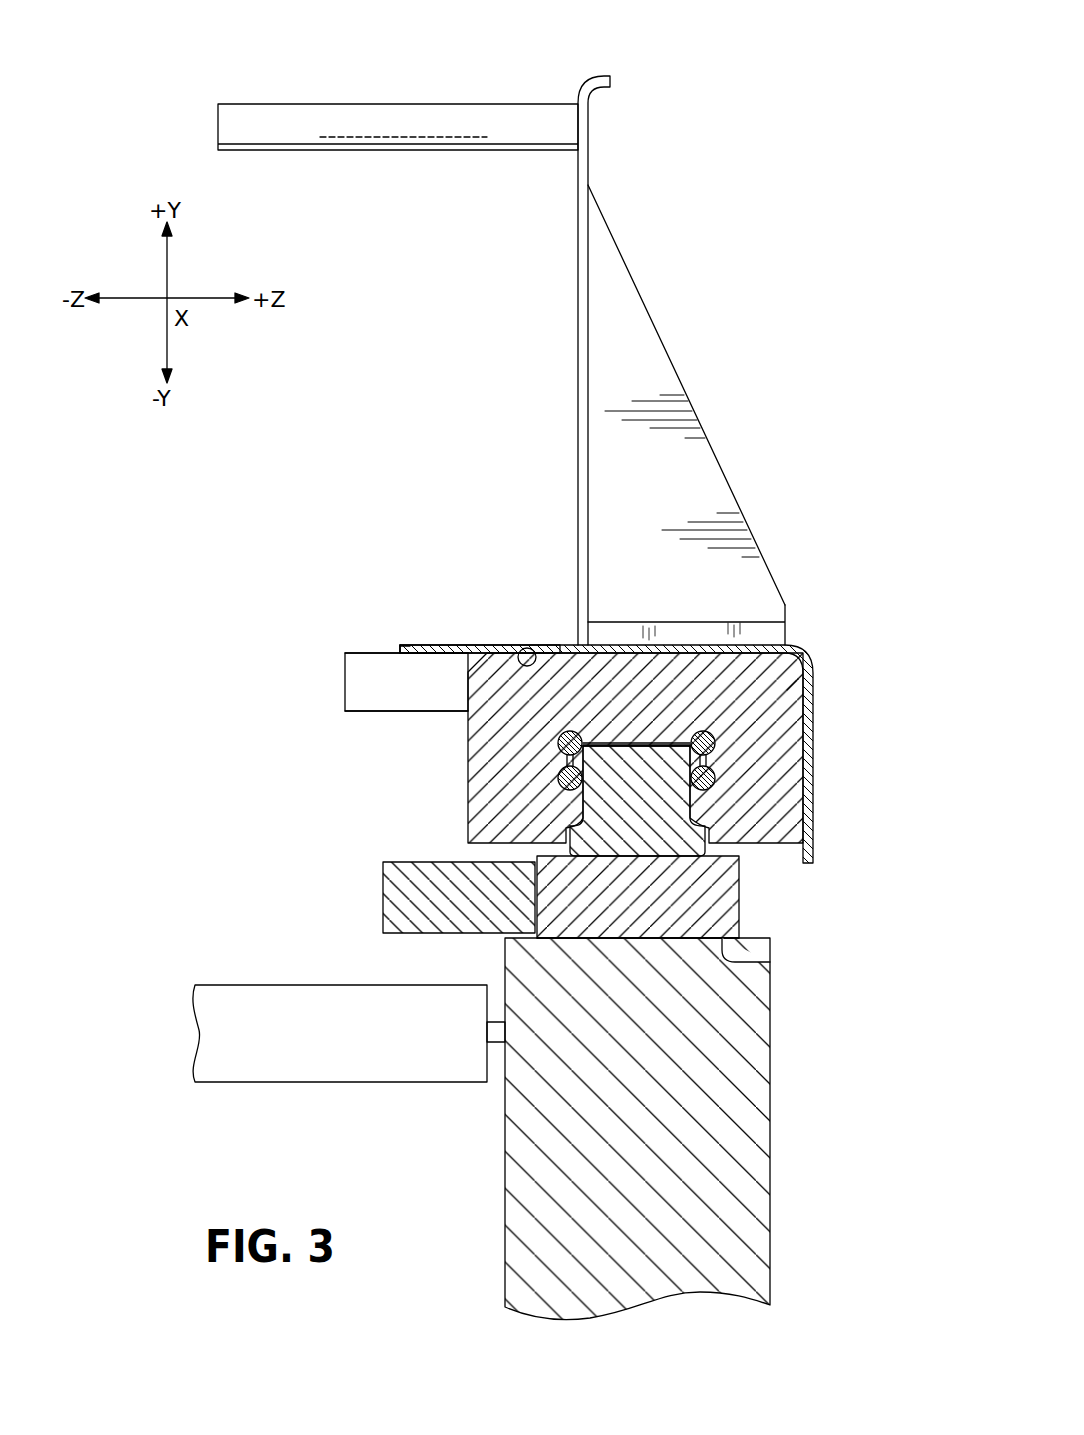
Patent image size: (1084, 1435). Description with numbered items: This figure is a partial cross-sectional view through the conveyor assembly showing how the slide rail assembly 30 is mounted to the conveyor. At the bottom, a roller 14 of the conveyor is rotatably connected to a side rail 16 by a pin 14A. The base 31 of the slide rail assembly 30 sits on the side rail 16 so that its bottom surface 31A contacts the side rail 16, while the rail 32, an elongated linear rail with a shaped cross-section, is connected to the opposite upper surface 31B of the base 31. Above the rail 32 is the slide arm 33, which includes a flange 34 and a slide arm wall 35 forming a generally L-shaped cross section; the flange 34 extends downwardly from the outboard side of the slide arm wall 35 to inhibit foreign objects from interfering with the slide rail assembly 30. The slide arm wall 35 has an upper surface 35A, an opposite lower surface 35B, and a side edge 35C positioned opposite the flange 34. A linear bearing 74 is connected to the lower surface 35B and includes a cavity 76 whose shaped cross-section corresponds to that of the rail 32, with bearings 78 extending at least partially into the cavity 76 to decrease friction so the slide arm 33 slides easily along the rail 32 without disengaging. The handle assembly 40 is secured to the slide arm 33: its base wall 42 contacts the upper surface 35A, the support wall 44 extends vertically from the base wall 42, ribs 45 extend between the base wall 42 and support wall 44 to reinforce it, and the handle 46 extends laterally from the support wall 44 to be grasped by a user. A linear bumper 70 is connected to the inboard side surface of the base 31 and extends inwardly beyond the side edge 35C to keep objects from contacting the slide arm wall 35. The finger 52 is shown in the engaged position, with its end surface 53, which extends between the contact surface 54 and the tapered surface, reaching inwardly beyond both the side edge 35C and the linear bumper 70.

The roller 14 is at (264, 1072).
The pin 14A is at (497, 1045).
The side rail 16 is at (768, 1093).
The slide rail assembly 30 is at (866, 262).
The base 31 is at (740, 907).
The bottom surface 31A is at (770, 962).
The upper surface 31B is at (699, 852).
The rail 32 is at (740, 882).
The slide arm 33 is at (805, 656).
The flange 34 is at (812, 742).
The slide arm wall 35 is at (460, 645).
The upper surface 35A is at (430, 645).
The lower surface 35B is at (539, 652).
The side edge 35C is at (394, 646).
The handle assembly 40 is at (710, 403).
The base wall 42 is at (762, 630).
The support wall 44 is at (575, 318).
The rib 45 is at (645, 368).
The handle 46 is at (380, 117).
The finger 52 is at (356, 648).
The end surface 53 is at (345, 697).
The contact surface 54 is at (363, 683).
The linear bumper 70 is at (383, 900).
The linear bearing 74 is at (787, 690).
The cavity 76 is at (672, 722).
The bearing 78 is at (558, 780).